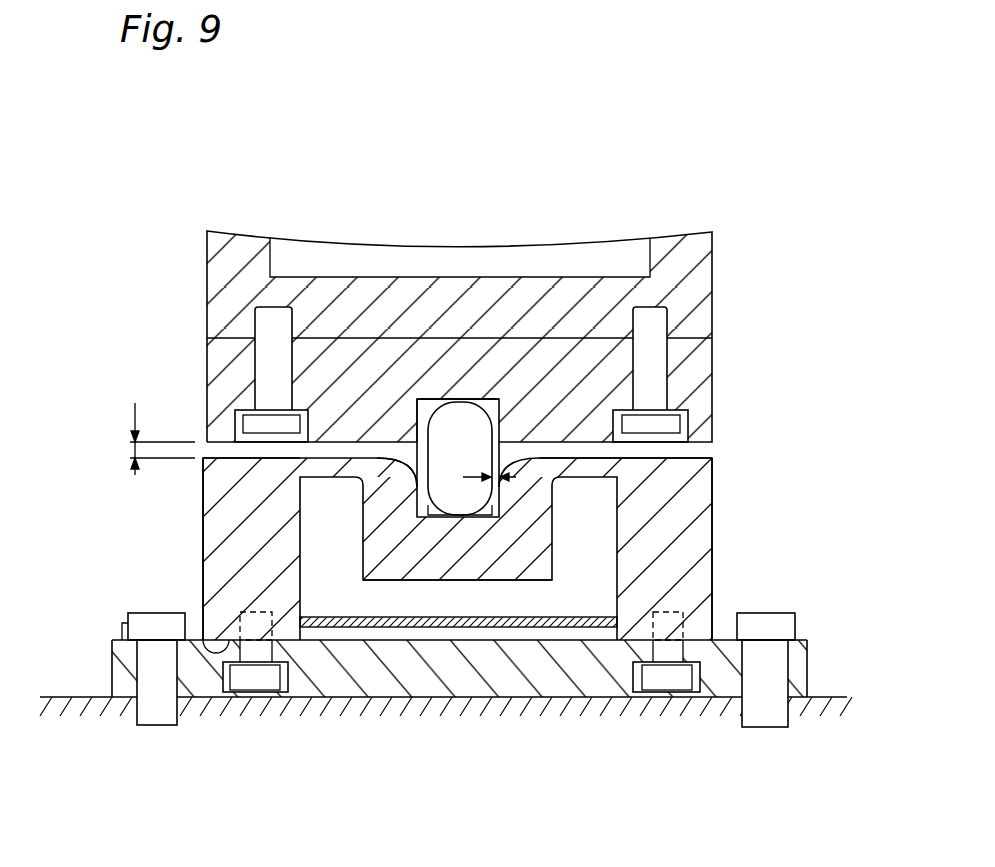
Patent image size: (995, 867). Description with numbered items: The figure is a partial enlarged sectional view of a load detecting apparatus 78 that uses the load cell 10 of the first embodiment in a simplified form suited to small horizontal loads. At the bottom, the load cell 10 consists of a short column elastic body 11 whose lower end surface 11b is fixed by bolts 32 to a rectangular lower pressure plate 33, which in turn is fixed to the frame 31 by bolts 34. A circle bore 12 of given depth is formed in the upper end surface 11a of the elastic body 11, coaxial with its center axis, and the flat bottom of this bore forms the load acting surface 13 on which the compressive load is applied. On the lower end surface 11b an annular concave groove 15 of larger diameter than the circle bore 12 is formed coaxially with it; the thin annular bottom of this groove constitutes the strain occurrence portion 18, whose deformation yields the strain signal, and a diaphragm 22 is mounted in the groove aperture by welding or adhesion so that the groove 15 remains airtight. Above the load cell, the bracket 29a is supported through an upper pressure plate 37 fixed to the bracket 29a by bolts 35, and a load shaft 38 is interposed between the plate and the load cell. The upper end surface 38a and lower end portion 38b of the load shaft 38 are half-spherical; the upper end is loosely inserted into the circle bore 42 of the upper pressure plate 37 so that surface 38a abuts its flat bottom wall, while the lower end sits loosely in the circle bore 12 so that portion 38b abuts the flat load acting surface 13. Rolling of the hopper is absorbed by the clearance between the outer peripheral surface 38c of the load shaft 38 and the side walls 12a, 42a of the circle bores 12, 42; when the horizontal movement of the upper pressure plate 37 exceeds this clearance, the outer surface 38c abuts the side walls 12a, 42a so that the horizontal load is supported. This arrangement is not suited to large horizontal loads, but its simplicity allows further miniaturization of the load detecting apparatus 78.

The load detecting apparatus 78 is at (731, 231).
The bracket 29a is at (206, 275).
The upper pressure plate 37 is at (700, 375).
The bolts 35 is at (265, 325).
The load shaft 38 is at (500, 428).
The upper end surface 38a is at (480, 427).
The lower end portion 38b is at (490, 517).
The outer peripheral surface 38c is at (551, 285).
The circle bore 42 is at (408, 420).
The side wall 42a is at (437, 398).
The circle bore 12 is at (327, 200).
The side wall 12a is at (418, 470).
The load cell 10 is at (716, 565).
The short column elastic body 11 is at (203, 518).
The upper end surface 11a is at (218, 458).
The lower end surface 11b is at (202, 638).
The load acting surface 13 is at (423, 517).
The annular concave groove 15 is at (592, 582).
The strain occurrence portion 18 is at (590, 472).
The diaphragm 22 is at (390, 624).
The frame 31 is at (83, 700).
The bolts 32 is at (253, 680).
The lower pressure plate 33 is at (137, 672).
The bolts 34 is at (127, 674).